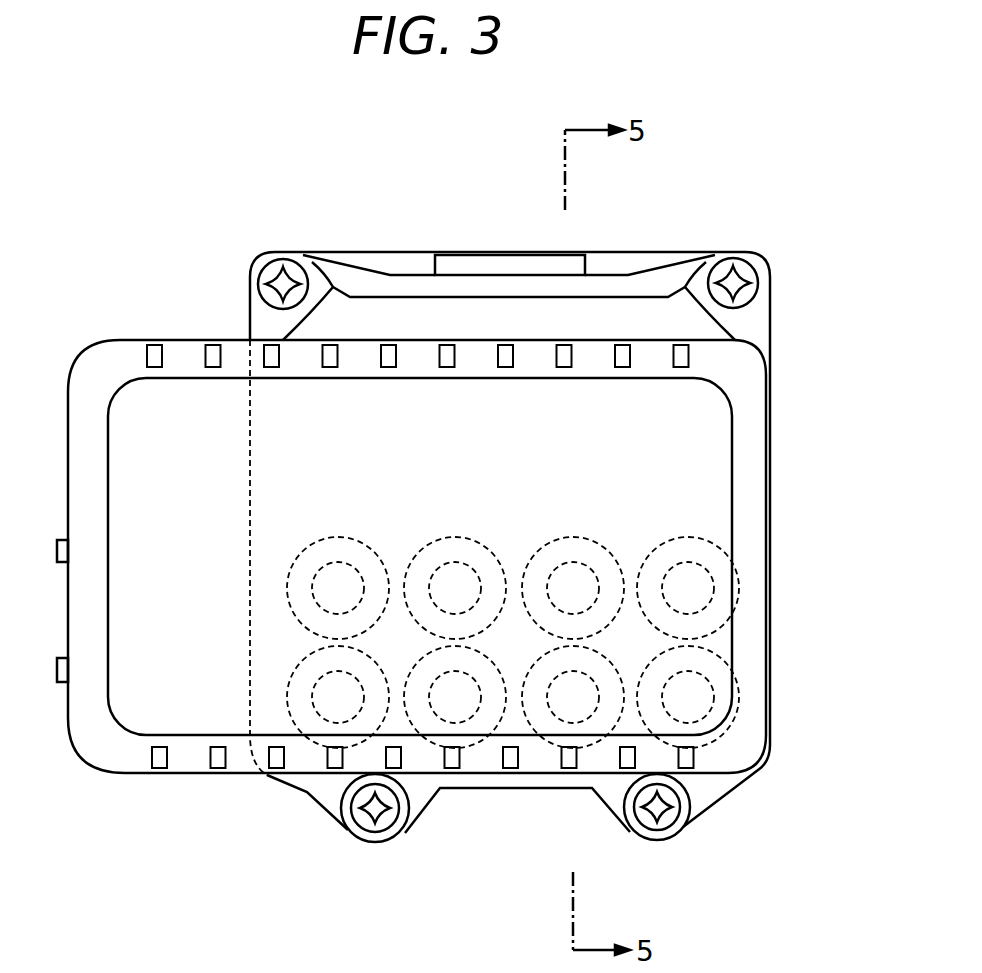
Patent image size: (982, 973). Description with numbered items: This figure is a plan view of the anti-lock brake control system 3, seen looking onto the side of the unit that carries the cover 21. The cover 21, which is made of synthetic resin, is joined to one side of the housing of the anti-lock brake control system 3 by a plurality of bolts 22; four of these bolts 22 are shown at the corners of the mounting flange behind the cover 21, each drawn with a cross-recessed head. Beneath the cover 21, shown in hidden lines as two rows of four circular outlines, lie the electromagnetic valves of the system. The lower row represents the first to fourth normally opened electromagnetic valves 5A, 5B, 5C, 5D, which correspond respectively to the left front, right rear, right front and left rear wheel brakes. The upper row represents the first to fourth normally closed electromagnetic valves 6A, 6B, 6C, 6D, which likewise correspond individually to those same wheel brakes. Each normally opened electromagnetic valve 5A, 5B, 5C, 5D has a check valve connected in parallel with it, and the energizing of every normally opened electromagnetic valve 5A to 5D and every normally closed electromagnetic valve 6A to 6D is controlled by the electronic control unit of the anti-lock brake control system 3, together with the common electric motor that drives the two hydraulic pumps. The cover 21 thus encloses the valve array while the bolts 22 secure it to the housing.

The anti-lock brake control system 3 is at (786, 417).
The cover 21 is at (758, 533).
The bolt 22 is at (276, 262).
The first normally opened electromagnetic valve 5A is at (313, 738).
The second normally opened electromagnetic valve 5B is at (557, 735).
The third normally opened electromagnetic valve 5C is at (466, 745).
The fourth normally opened electromagnetic valve 5D is at (725, 740).
The first normally closed electromagnetic valve 6A is at (343, 545).
The second normally closed electromagnetic valve 6B is at (575, 545).
The third normally closed electromagnetic valve 6C is at (458, 545).
The fourth normally closed electromagnetic valve 6D is at (691, 545).